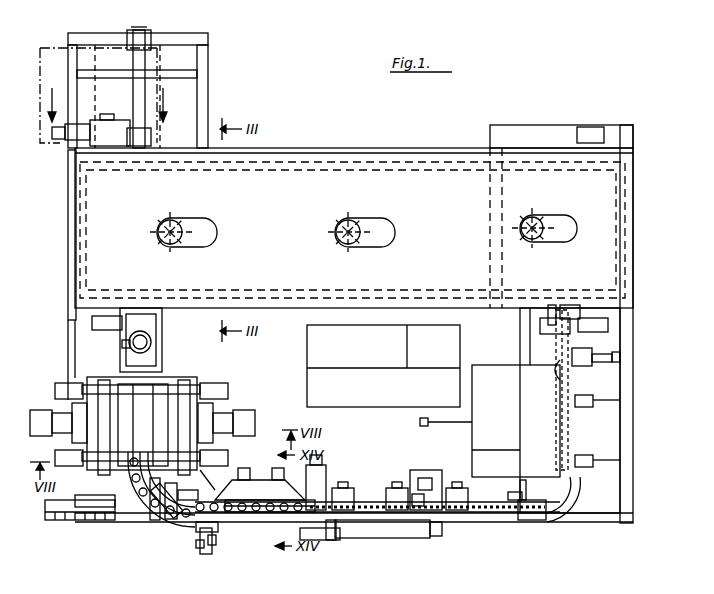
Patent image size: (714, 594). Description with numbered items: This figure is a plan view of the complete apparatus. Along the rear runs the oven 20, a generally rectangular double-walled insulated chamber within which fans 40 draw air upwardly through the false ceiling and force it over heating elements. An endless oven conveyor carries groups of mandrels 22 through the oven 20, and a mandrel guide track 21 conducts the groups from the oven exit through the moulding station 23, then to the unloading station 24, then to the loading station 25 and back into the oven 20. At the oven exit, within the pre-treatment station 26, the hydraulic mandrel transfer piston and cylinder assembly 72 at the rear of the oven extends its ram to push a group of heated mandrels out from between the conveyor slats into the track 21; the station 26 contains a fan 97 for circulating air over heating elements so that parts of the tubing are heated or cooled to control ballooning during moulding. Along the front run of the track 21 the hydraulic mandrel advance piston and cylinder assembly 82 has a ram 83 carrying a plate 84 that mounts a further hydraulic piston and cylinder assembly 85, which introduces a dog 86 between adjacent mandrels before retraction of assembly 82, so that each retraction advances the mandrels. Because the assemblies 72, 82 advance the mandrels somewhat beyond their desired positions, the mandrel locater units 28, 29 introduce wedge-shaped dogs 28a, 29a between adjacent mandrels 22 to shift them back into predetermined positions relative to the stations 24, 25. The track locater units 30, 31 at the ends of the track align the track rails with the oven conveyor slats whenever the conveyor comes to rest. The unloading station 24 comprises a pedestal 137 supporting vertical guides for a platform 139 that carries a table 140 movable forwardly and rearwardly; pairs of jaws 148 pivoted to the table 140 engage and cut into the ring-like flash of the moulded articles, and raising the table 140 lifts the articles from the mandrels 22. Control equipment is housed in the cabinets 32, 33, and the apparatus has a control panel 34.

The oven 20 is at (318, 185).
The fans 40 is at (172, 214).
The hydraulic mandrel transfer piston and cylinder assembly 72 is at (142, 64).
The cabinet 33 is at (62, 83).
The track locater unit 31 is at (108, 324).
The fan 97 is at (140, 342).
The pre-treatment station 26 is at (118, 356).
The moulding station 23 is at (230, 406).
The cabinet 32 is at (390, 360).
The loading station 25 is at (520, 455).
The track locater unit 30 is at (554, 312).
The mandrel locater unit 29 is at (582, 365).
The wedge-shaped dog 29a is at (556, 370).
The mandrels 22 is at (490, 515).
The mandrel guide track 21 is at (135, 495).
The control panel 34 is at (60, 522).
The dog 86 is at (205, 536).
The hydraulic piston and cylinder assembly 85 is at (202, 550).
The plate 84 is at (212, 540).
The pedestal 137 is at (232, 540).
The unloading station 24 is at (258, 520).
The table 140 is at (308, 540).
The platform 139 is at (300, 478).
The mandrel locater unit 28 is at (345, 490).
The ram 83 is at (335, 535).
The jaws 148 is at (345, 535).
The wedge-shaped dog 28a is at (380, 540).
The hydraulic mandrel advance piston and cylinder assembly 82 is at (415, 535).